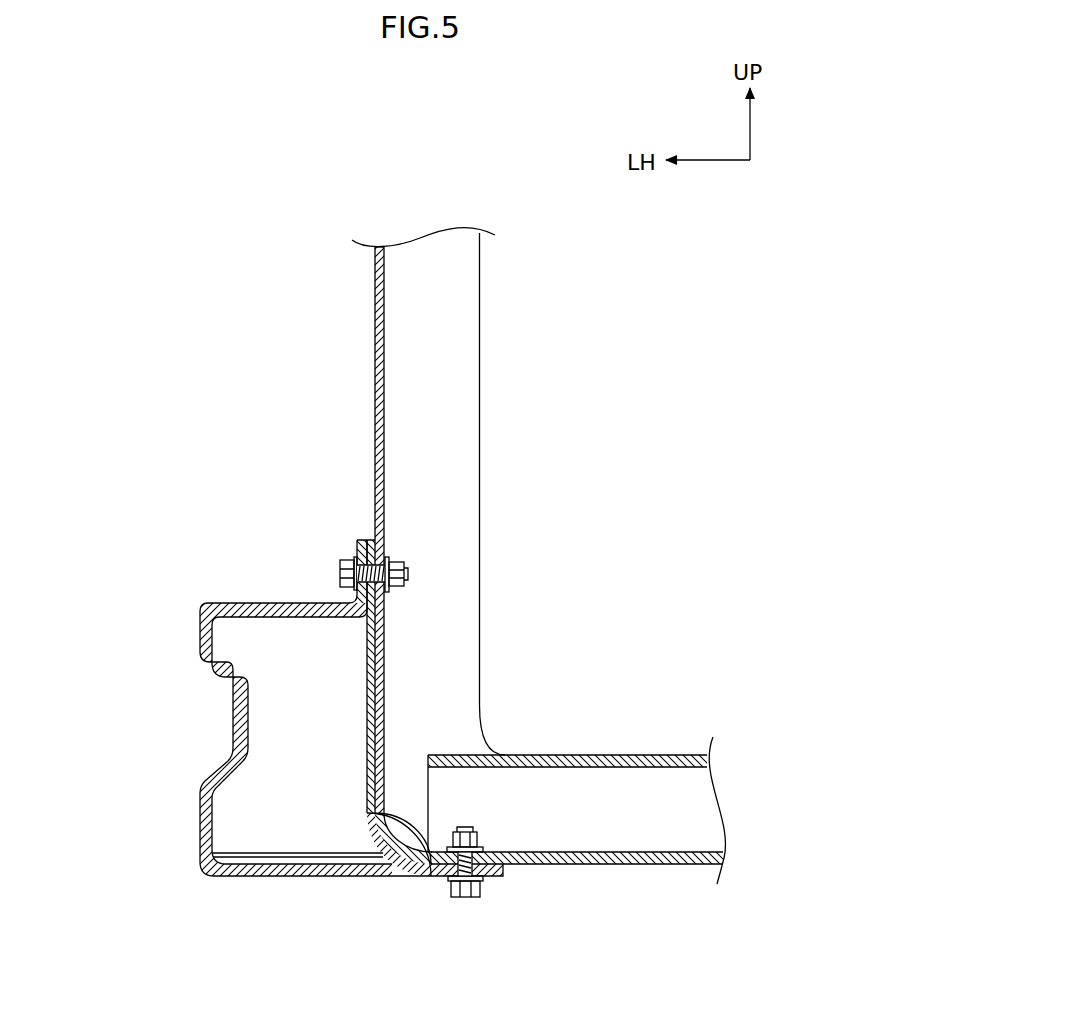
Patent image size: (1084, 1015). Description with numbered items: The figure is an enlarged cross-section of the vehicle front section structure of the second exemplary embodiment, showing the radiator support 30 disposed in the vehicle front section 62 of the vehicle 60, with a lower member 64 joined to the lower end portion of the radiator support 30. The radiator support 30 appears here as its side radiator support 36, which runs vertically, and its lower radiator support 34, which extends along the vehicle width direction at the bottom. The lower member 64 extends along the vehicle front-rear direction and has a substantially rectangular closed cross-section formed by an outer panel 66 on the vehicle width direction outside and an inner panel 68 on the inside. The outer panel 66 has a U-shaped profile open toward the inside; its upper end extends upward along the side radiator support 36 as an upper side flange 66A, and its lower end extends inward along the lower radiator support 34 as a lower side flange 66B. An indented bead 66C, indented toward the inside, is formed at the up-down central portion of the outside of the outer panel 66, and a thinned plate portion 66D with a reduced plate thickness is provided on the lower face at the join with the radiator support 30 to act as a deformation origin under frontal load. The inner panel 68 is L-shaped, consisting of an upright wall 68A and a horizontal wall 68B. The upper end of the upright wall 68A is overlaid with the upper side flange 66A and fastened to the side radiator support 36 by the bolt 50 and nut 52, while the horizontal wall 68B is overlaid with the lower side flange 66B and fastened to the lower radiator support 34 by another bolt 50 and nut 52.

The radiator support 30 is at (482, 389).
The lower radiator support 34 is at (607, 753).
The side radiator support 36 is at (373, 335).
The bolt 50 is at (340, 572).
The nut 52 is at (395, 593).
The vehicle 60 is at (357, 648).
The vehicle front section 62 is at (180, 420).
The lower member 64 is at (185, 612).
The outer panel 66 is at (258, 600).
The upper side flange 66A is at (357, 540).
The lower side flange 66B is at (503, 880).
The indented bead 66C is at (233, 735).
The thinned plate portion 66D is at (290, 848).
The inner panel 68 is at (445, 733).
The upright wall 68A is at (365, 677).
The horizontal wall 68B is at (500, 870).